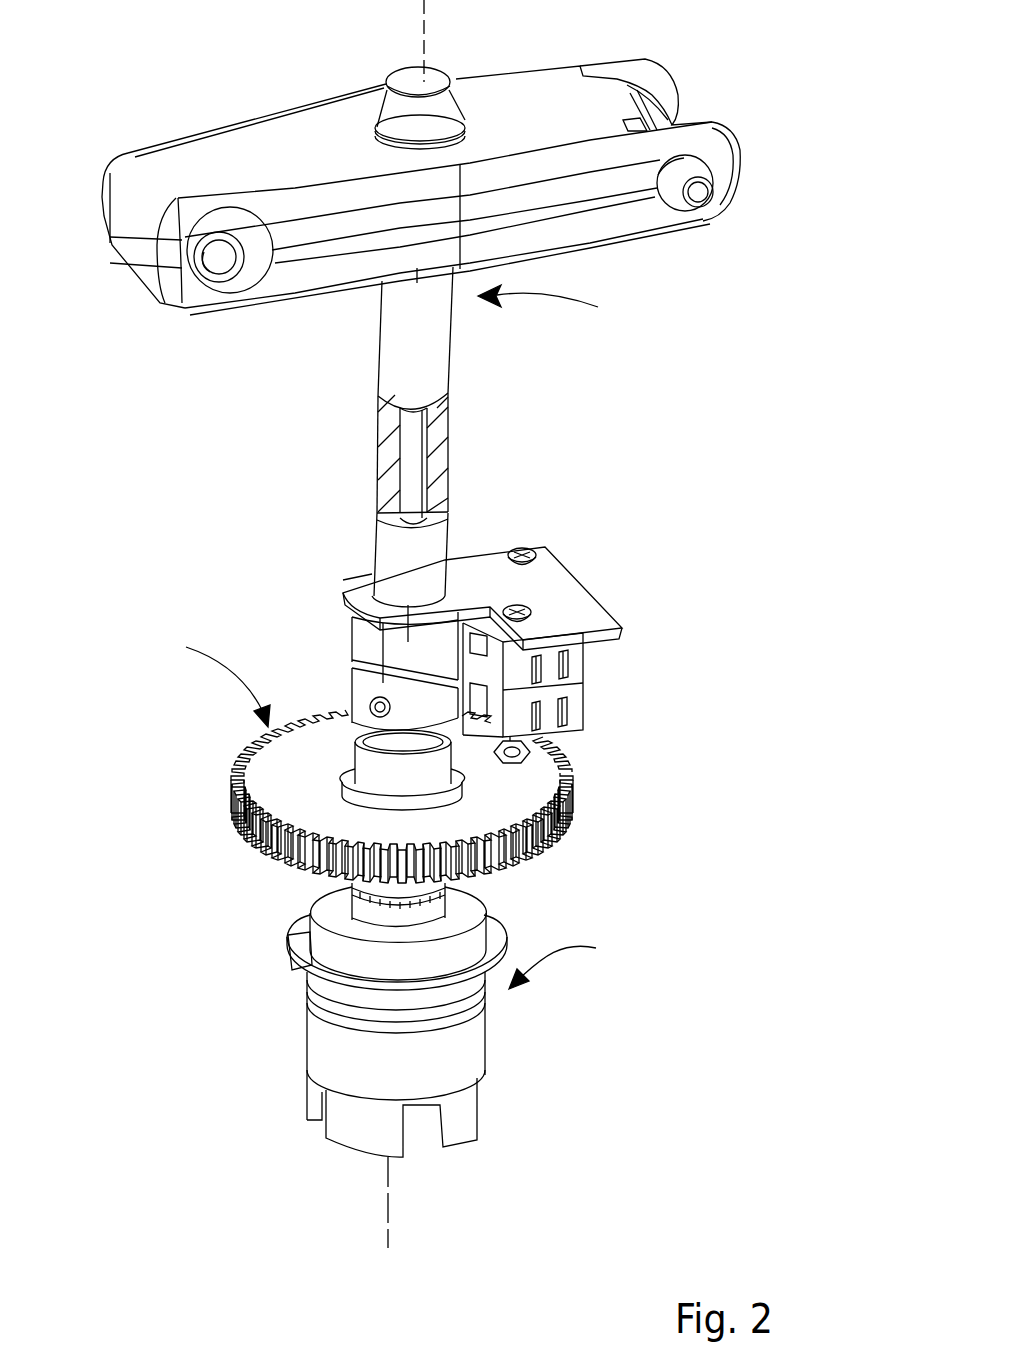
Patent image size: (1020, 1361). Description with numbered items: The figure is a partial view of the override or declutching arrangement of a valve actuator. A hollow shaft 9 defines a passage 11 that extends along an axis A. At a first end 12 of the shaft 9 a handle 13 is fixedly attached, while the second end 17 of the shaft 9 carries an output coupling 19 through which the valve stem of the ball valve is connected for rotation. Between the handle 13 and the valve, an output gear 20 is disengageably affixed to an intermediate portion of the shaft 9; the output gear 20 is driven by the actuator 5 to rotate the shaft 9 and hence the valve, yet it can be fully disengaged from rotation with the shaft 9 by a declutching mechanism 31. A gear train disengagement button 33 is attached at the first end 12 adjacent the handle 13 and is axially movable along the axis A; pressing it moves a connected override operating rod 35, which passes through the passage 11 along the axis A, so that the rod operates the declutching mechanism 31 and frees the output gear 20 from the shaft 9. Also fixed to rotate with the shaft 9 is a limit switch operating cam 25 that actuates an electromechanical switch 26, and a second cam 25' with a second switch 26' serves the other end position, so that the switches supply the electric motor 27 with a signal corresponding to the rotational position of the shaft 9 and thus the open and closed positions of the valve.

The actuator 5 is at (555, 833).
The hollow shaft 9 is at (387, 413).
The passage 11 is at (397, 470).
The first end 12 is at (559, 302).
The handle 13 is at (230, 143).
The second end 17 is at (462, 938).
The output coupling 19 is at (455, 1058).
The output gear 20 is at (258, 779).
The limit switch operating cam 25 is at (355, 644).
The second cam 25' is at (366, 699).
The electromechanical switch 26 is at (585, 721).
The second switch 26' is at (569, 600).
The electric motor 27 is at (573, 669).
The declutching mechanism 31 is at (208, 672).
The gear train disengagement button 33 is at (402, 80).
The override operating rod 35 is at (410, 457).
The axis A is at (427, 25).